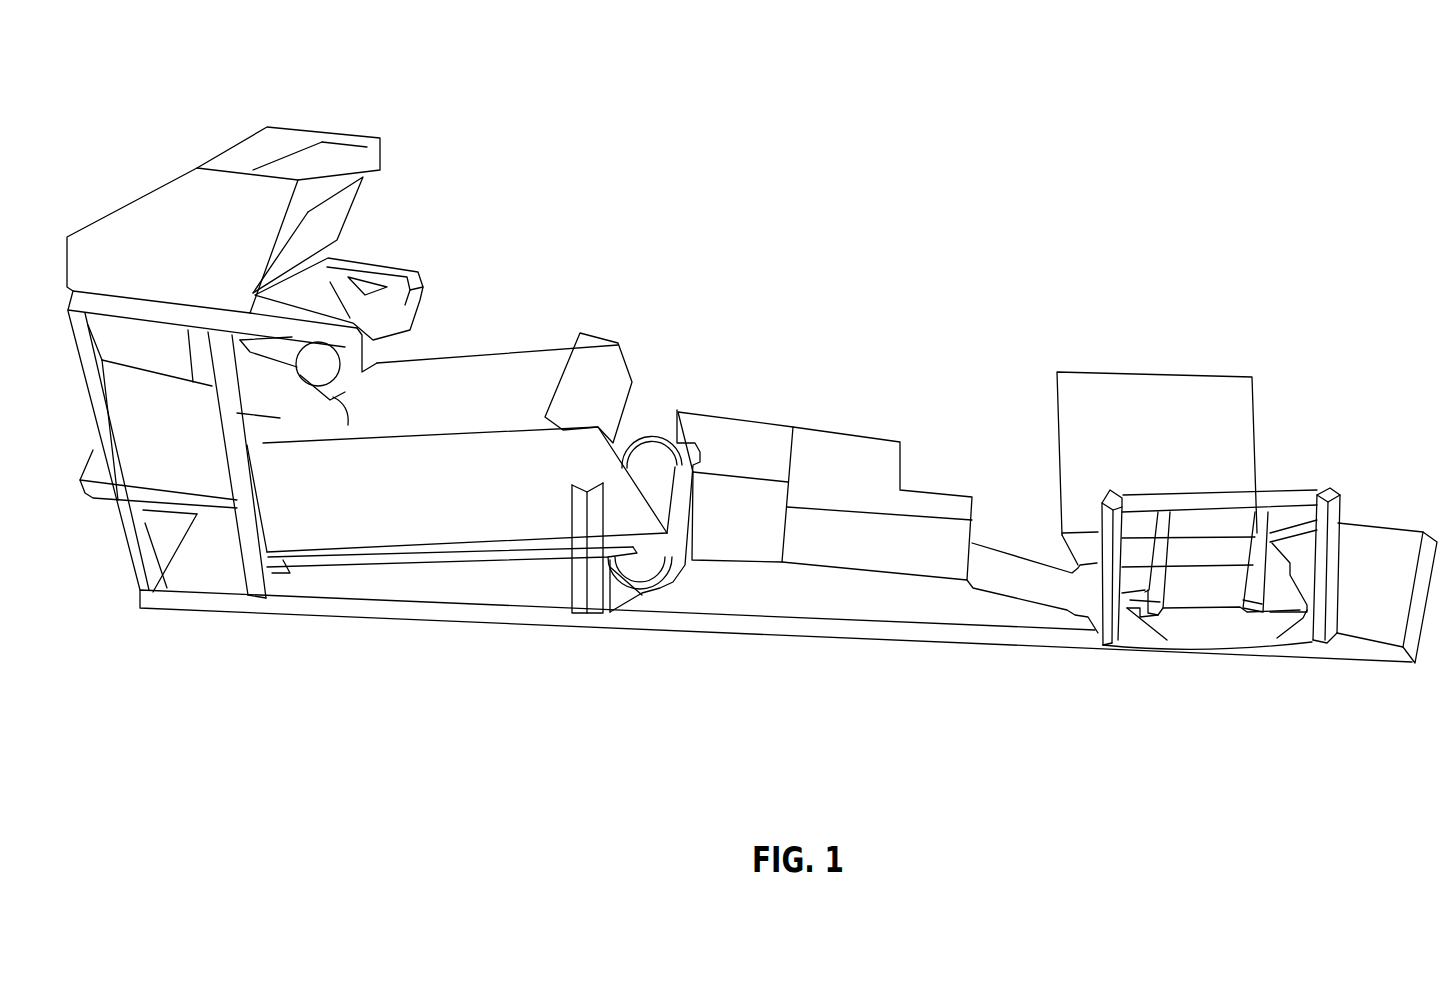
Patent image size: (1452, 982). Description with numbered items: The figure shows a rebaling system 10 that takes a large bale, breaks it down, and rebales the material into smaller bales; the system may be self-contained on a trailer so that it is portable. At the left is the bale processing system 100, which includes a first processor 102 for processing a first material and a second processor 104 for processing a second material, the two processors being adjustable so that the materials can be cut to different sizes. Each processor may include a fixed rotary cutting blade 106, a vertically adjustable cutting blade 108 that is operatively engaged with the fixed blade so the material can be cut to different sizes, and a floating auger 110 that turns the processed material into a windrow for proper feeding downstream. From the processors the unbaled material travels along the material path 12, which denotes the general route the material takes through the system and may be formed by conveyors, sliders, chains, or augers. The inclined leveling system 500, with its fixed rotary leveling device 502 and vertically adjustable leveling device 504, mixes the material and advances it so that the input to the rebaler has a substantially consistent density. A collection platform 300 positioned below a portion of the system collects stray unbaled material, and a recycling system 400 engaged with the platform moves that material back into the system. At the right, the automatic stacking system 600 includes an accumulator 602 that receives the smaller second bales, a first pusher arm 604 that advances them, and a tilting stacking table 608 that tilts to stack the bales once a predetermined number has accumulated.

The rebaling system 10 is at (810, 76).
The material path 12 is at (750, 526).
The bale processing system 100 is at (470, 250).
The first processor 102 is at (168, 423).
The second processor 104 is at (175, 242).
The fixed rotary cutting blade 106 is at (327, 247).
The vertically adjustable cutting blade 108 is at (347, 268).
The floating auger 110 is at (323, 358).
The collection platform 300 is at (448, 622).
The recycling system 400 is at (868, 433).
The leveling system 500 is at (487, 347).
The fixed rotary leveling device 502 is at (658, 467).
The vertically adjustable leveling device 504 is at (583, 363).
The automatic stacking system 600 is at (1197, 360).
The accumulator 602 is at (1200, 587).
The first pusher arm 604 is at (1260, 580).
The tilting stacking table 608 is at (1257, 438).